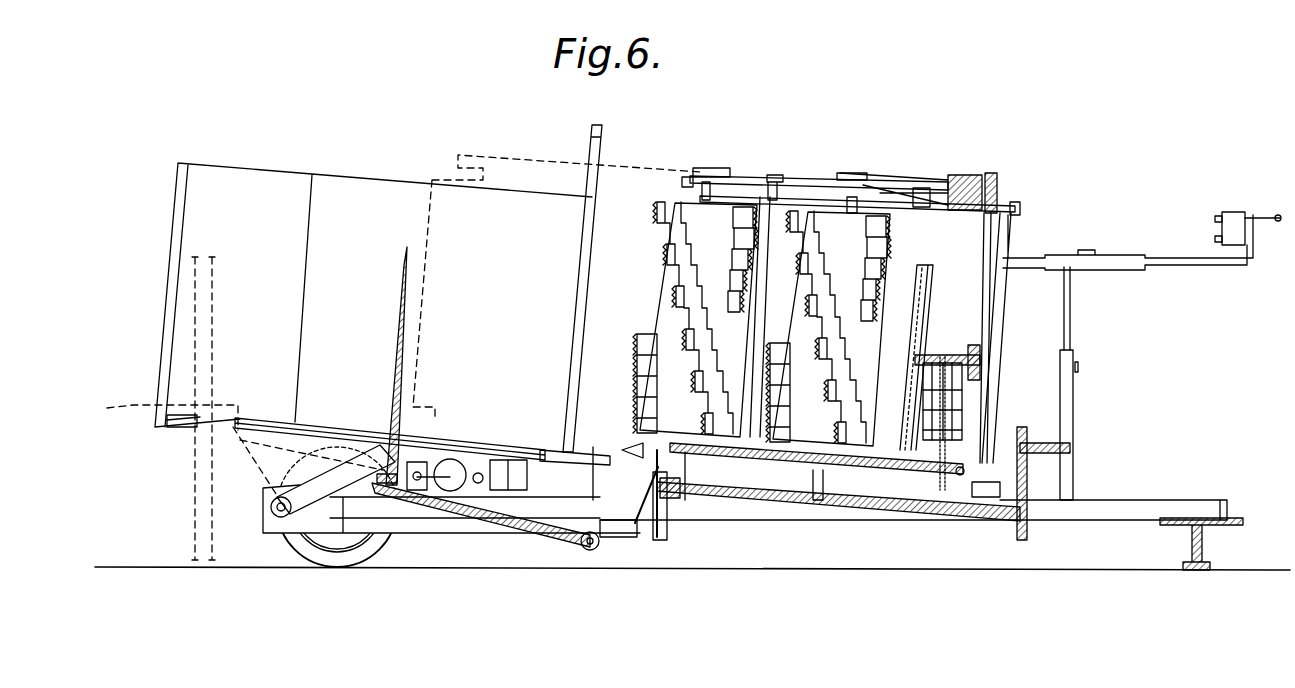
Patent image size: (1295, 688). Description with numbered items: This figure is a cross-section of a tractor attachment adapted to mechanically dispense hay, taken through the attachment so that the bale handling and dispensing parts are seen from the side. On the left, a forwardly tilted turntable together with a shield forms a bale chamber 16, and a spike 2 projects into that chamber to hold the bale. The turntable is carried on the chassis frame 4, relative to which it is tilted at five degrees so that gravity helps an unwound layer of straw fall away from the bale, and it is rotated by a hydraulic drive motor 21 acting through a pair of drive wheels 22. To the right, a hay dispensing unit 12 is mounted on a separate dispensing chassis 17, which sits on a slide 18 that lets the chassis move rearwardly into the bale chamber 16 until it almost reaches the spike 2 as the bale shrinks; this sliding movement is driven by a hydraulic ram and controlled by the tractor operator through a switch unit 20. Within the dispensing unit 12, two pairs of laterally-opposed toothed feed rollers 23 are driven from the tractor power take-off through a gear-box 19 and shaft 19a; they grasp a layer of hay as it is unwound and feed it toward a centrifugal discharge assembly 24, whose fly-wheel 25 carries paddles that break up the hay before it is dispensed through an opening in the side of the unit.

The spike 2 is at (405, 262).
The chassis frame 4 is at (568, 458).
The hay dispensing unit 12 is at (841, 152).
The bale chamber 16 is at (270, 166).
The dispensing chassis 17 is at (860, 470).
The slide 18 is at (748, 458).
The gear-box 19 is at (967, 178).
The shaft 19a is at (800, 498).
The switch unit 20 is at (1233, 212).
The hydraulic drive motor 21 is at (507, 492).
The drive wheels 22 is at (447, 492).
The toothed feed rollers 23 is at (682, 218).
The centrifugal discharge assembly 24 is at (930, 284).
The fly-wheel 25 is at (920, 308).